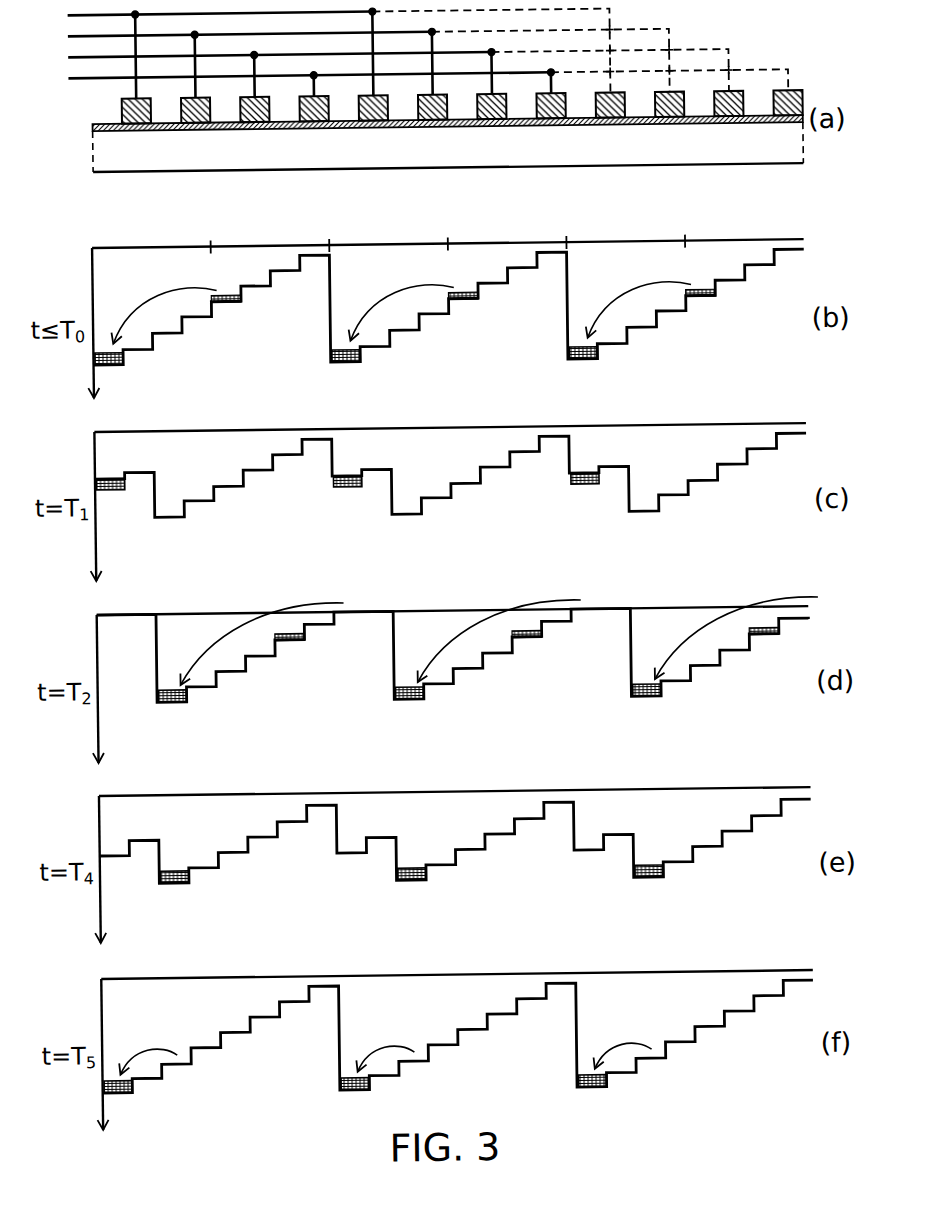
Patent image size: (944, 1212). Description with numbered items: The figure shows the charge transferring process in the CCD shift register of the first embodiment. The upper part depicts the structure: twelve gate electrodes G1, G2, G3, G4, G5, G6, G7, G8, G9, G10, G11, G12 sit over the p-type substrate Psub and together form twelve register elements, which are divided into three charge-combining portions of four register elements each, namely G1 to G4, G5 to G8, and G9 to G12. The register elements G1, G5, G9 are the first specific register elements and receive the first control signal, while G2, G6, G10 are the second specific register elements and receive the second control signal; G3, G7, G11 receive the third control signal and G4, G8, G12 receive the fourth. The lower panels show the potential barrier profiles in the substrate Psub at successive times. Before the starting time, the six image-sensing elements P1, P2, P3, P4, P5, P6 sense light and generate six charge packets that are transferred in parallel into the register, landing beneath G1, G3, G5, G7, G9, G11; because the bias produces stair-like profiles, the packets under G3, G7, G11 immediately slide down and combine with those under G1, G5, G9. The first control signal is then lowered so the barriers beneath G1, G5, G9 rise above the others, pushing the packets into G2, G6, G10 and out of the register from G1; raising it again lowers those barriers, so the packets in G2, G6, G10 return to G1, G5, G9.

The register element G1 is at (123, 111).
The register element G2 is at (182, 111).
The register element G3 is at (242, 110).
The register element G4 is at (301, 109).
The register element G5 is at (360, 108).
The register element G6 is at (419, 108).
The register element G7 is at (479, 107).
The register element G8 is at (538, 106).
The register element G9 is at (597, 105).
The register element G10 is at (654, 105).
The register element G11 is at (713, 104).
The register element G12 is at (773, 103).
The p-type substrate Psub is at (791, 161).
The image-sensing element P1 is at (115, 275).
The image-sensing element P2 is at (230, 291).
The image-sensing element P3 is at (352, 275).
The image-sensing element P4 is at (467, 291).
The image-sensing element P5 is at (589, 275).
The image-sensing element P6 is at (704, 291).